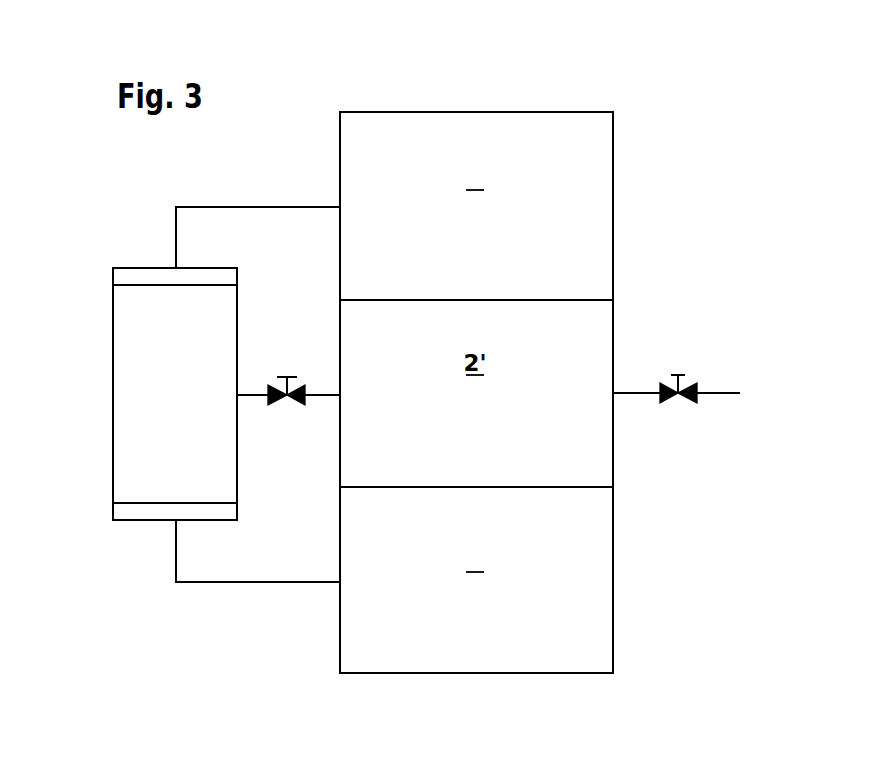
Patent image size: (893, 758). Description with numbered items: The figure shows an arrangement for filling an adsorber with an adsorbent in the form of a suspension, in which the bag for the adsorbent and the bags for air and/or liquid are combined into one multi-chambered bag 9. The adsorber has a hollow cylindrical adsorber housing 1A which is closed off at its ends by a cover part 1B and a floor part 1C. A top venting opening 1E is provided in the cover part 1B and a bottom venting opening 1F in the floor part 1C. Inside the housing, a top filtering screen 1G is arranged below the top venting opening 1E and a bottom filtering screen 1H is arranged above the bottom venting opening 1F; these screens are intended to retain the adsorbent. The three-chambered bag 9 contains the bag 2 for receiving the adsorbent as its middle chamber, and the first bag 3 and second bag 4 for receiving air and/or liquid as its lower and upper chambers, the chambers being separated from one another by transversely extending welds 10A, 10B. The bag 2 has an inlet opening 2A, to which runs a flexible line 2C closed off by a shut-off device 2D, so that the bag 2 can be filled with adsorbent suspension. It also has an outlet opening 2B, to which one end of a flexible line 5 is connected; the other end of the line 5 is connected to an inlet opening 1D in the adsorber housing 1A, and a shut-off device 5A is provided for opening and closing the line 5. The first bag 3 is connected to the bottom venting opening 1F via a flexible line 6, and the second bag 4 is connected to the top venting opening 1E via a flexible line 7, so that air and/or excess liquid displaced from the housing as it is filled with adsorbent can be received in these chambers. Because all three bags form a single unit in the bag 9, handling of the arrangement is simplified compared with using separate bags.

The adsorber housing 1A is at (113, 395).
The cover part 1B is at (150, 268).
The floor part 1C is at (150, 522).
The inlet opening 1D is at (237, 400).
The top venting opening 1E is at (176, 267).
The bottom venting opening 1F is at (176, 522).
The top filtering screen 1G is at (155, 285).
The bottom filtering screen 1H is at (155, 502).
The bag for receiving the adsorbent 2 is at (657, 318).
The inlet opening 2A is at (614, 393).
The outlet opening 2B is at (338, 391).
The flexible line 2C is at (718, 393).
The shut-off device 2D is at (685, 400).
The first bag for receiving air and/or liquid 3 is at (648, 589).
The second bag for receiving air and/or liquid 4 is at (630, 155).
The flexible line 5 is at (318, 398).
The shut-off device 5A is at (273, 385).
The flexible line 6 is at (253, 583).
The flexible line 7 is at (253, 207).
The multi-chambered bag 9 is at (627, 566).
The transversely extending weld 10A is at (487, 300).
The transversely extending weld 10B is at (487, 487).